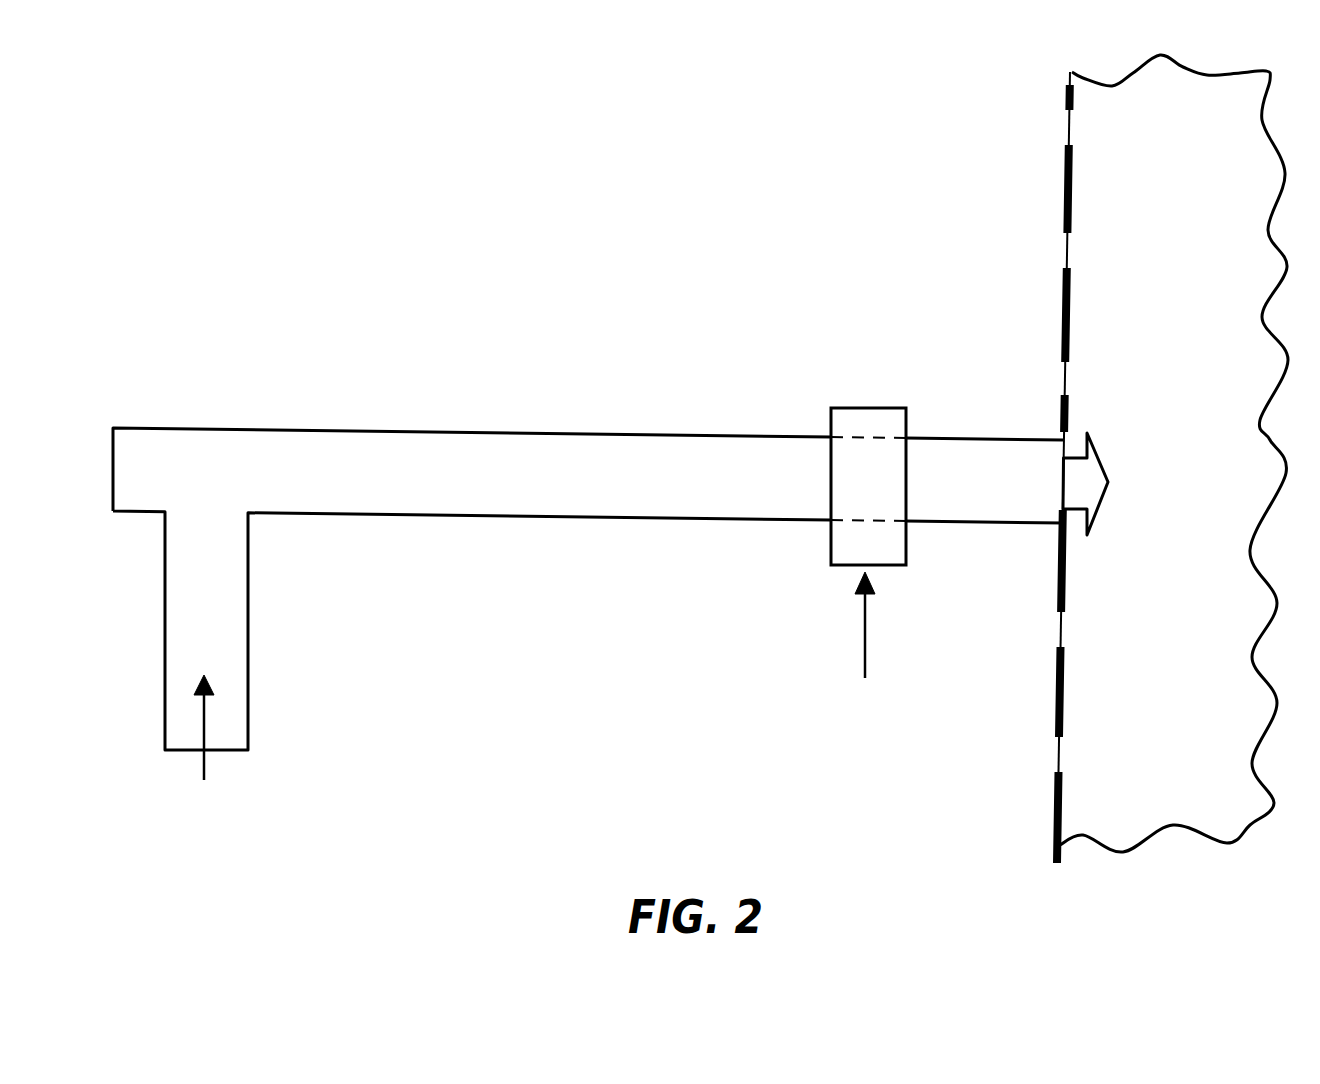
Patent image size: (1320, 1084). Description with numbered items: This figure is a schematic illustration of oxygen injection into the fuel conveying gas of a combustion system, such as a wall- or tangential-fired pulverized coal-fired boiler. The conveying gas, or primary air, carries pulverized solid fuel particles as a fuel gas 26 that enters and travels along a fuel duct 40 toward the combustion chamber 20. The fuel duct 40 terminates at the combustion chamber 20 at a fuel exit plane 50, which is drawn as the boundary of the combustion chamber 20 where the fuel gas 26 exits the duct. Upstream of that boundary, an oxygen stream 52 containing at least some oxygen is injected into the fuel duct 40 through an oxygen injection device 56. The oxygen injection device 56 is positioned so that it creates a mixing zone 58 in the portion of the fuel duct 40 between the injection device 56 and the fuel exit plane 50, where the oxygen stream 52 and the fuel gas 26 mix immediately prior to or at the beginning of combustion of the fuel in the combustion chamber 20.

The combustion chamber 20 is at (1184, 496).
The fuel gas 26 is at (204, 765).
The fuel duct 40 is at (343, 486).
The fuel exit plane 50 is at (1057, 808).
The oxygen stream 52 is at (865, 663).
The oxygen injection device 56 is at (838, 407).
The mixing zone 58 is at (1005, 492).